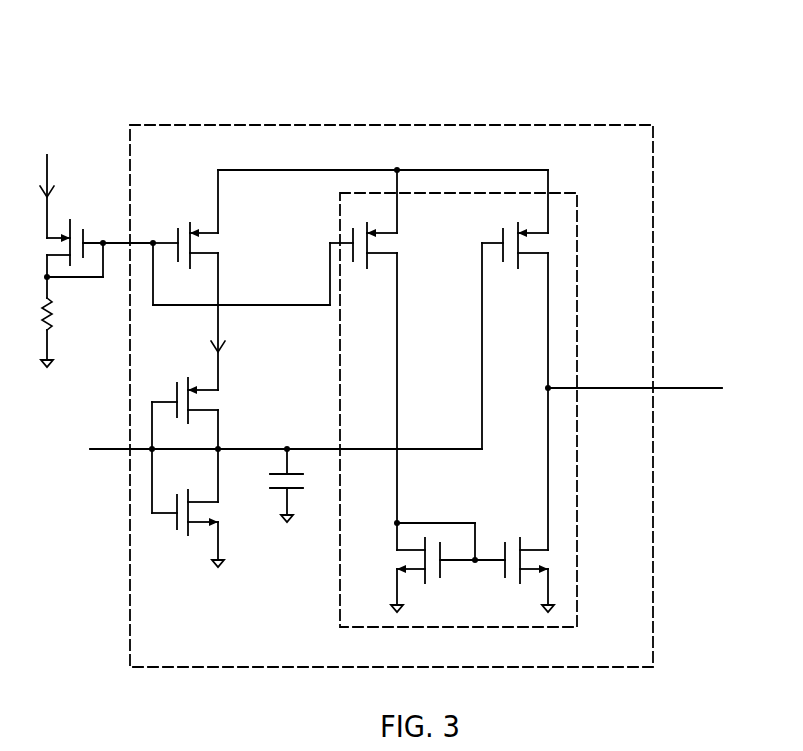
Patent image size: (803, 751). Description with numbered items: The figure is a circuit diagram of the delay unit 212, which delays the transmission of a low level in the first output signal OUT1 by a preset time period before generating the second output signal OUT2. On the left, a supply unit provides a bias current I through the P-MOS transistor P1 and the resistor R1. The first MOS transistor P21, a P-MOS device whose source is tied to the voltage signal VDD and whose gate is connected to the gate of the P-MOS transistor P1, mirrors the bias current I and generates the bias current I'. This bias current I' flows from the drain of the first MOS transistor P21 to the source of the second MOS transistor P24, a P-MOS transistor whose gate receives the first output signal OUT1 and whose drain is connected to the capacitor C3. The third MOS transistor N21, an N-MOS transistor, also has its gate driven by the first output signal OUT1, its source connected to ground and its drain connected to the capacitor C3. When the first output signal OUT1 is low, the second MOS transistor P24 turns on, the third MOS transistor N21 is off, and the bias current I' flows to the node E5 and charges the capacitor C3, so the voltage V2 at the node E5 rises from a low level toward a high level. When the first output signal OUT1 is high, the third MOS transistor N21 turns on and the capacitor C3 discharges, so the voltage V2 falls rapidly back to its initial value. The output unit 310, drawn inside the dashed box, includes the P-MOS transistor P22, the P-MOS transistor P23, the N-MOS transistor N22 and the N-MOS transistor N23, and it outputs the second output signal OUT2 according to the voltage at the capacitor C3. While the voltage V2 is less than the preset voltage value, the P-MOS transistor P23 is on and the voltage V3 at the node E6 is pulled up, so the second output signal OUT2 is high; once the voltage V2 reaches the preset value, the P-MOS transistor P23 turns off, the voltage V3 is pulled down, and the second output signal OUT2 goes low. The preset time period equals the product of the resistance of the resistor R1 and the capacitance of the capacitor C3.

The delay unit 212 is at (132, 85).
The output unit 310 is at (578, 302).
The P-MOS transistor P1 is at (88, 259).
The resistor R1 is at (63, 332).
The first MOS transistor P21 is at (251, 280).
The P-MOS transistor P22 is at (375, 360).
The P-MOS transistor P23 is at (514, 360).
The second MOS transistor P24 is at (194, 428).
The third MOS transistor N21 is at (197, 528).
The N-MOS transistor N22 is at (448, 567).
The N-MOS transistor N23 is at (526, 576).
The capacitor C3 is at (279, 485).
The node E5 is at (348, 440).
The node E6 is at (620, 391).
The voltage at node E5 V2 is at (285, 447).
The voltage at node E6 V3 is at (547, 385).
The voltage signal VDD is at (383, 158).
The first output signal OUT1 is at (110, 448).
The second output signal OUT2 is at (686, 387).
The bias current I is at (59, 196).
The bias current I' is at (230, 333).